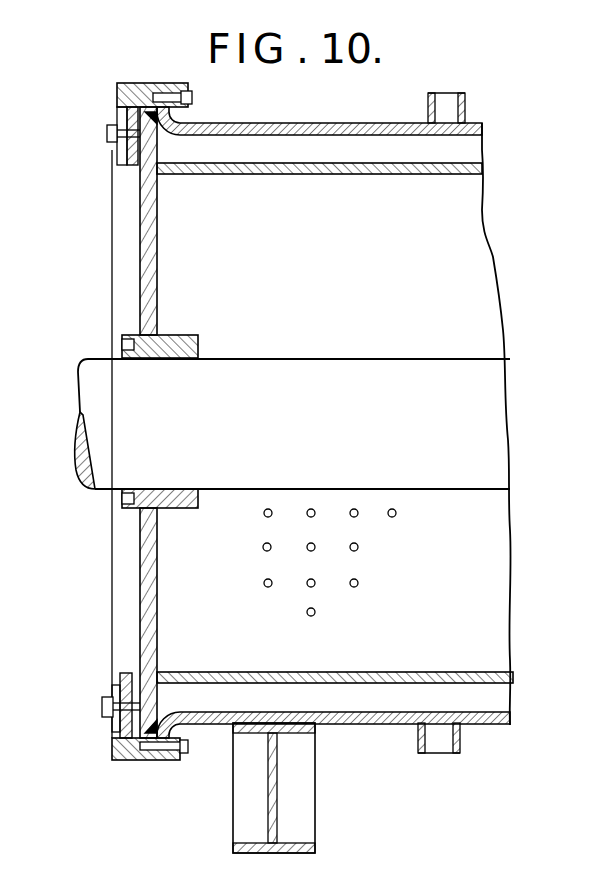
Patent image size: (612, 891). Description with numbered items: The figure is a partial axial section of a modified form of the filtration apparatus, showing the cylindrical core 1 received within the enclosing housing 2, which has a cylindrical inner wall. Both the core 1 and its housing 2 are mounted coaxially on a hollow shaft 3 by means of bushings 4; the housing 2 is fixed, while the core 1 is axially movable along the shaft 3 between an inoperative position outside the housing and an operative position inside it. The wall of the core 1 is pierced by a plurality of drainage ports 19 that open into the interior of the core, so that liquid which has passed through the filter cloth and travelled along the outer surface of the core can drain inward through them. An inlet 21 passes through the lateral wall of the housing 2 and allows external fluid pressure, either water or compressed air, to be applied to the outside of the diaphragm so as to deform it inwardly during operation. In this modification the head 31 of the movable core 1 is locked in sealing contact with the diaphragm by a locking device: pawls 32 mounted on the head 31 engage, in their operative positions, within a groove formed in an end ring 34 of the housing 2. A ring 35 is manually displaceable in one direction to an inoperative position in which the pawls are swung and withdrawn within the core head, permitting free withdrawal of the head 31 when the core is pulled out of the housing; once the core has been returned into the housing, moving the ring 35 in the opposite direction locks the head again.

The cylindrical core 1 is at (333, 190).
The housing 2 is at (258, 122).
The hollow shaft 3 is at (343, 385).
The bushings 4 is at (140, 338).
The drainage ports 19 is at (358, 548).
The inlet 21 is at (437, 745).
The head 31 is at (140, 600).
The pawls 32 is at (110, 745).
The end ring 34 is at (128, 757).
The ring 35 is at (112, 168).